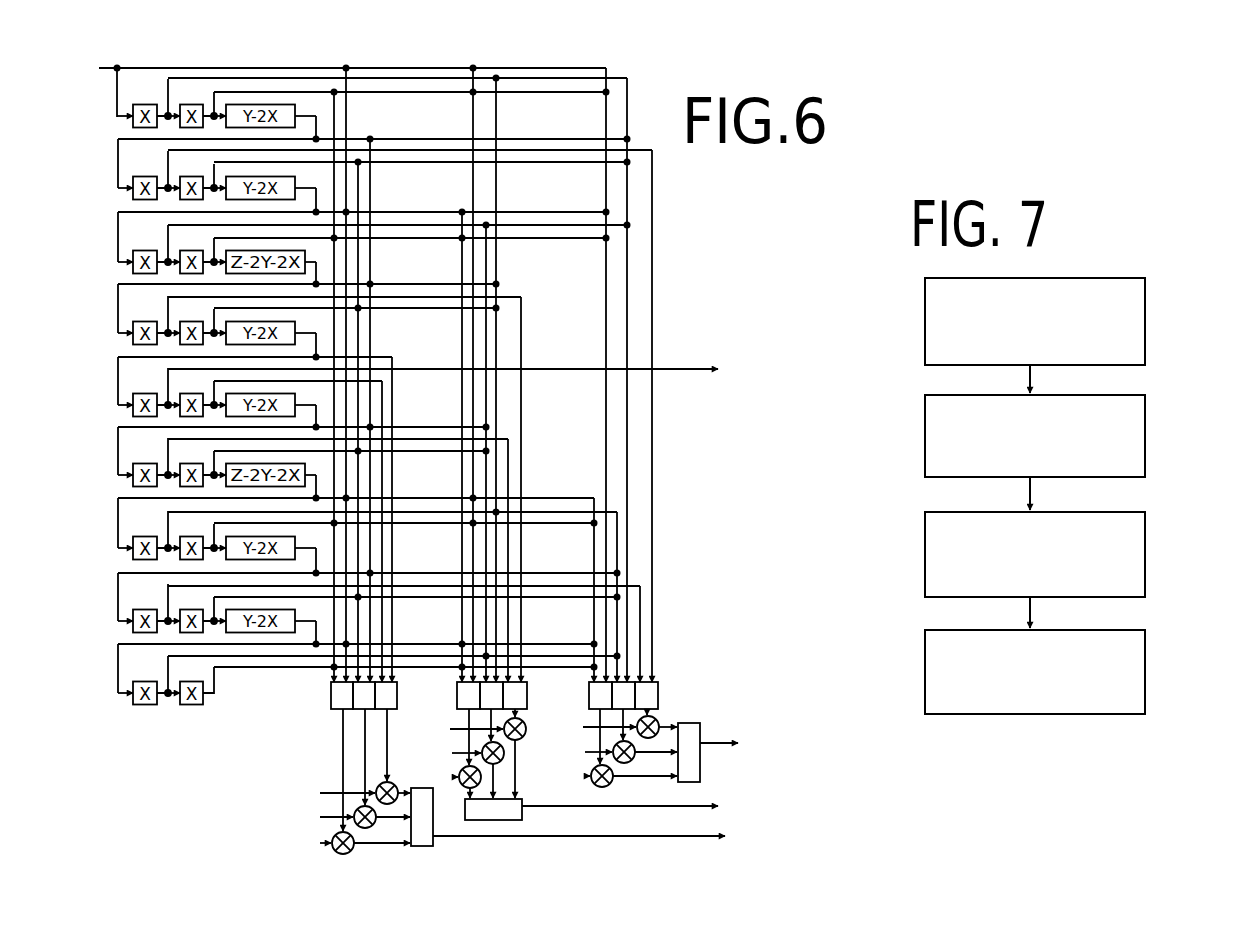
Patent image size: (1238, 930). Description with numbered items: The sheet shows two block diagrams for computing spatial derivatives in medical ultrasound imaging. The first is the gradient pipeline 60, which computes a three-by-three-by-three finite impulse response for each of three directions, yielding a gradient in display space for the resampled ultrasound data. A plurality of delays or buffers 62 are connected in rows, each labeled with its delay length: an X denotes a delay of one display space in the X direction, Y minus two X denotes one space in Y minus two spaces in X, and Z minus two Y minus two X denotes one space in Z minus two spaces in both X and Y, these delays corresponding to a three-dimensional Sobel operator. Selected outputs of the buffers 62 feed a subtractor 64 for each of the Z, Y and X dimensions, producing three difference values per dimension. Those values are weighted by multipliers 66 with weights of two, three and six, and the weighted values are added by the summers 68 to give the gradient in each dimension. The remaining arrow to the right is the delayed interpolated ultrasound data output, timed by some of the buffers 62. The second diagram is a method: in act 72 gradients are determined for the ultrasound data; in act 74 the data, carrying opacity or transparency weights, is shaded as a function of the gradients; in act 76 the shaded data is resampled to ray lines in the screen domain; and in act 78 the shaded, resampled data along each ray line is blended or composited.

In FIG. 6, the gradient pipeline 60 is at (175, 809).
In FIG. 6, the buffers 62 is at (223, 130).
In FIG. 6, the subtractor 64 is at (331, 690).
In FIG. 6, the multipliers 66 is at (336, 851).
In FIG. 6, the summers 68 is at (428, 846).
In FIG. 7, the act of determining gradients 72 is at (1145, 323).
In FIG. 7, the act of shading 74 is at (1145, 440).
In FIG. 7, the act of resampling to screen domain 76 is at (1145, 557).
In FIG. 7, the act of blending 78 is at (1145, 672).